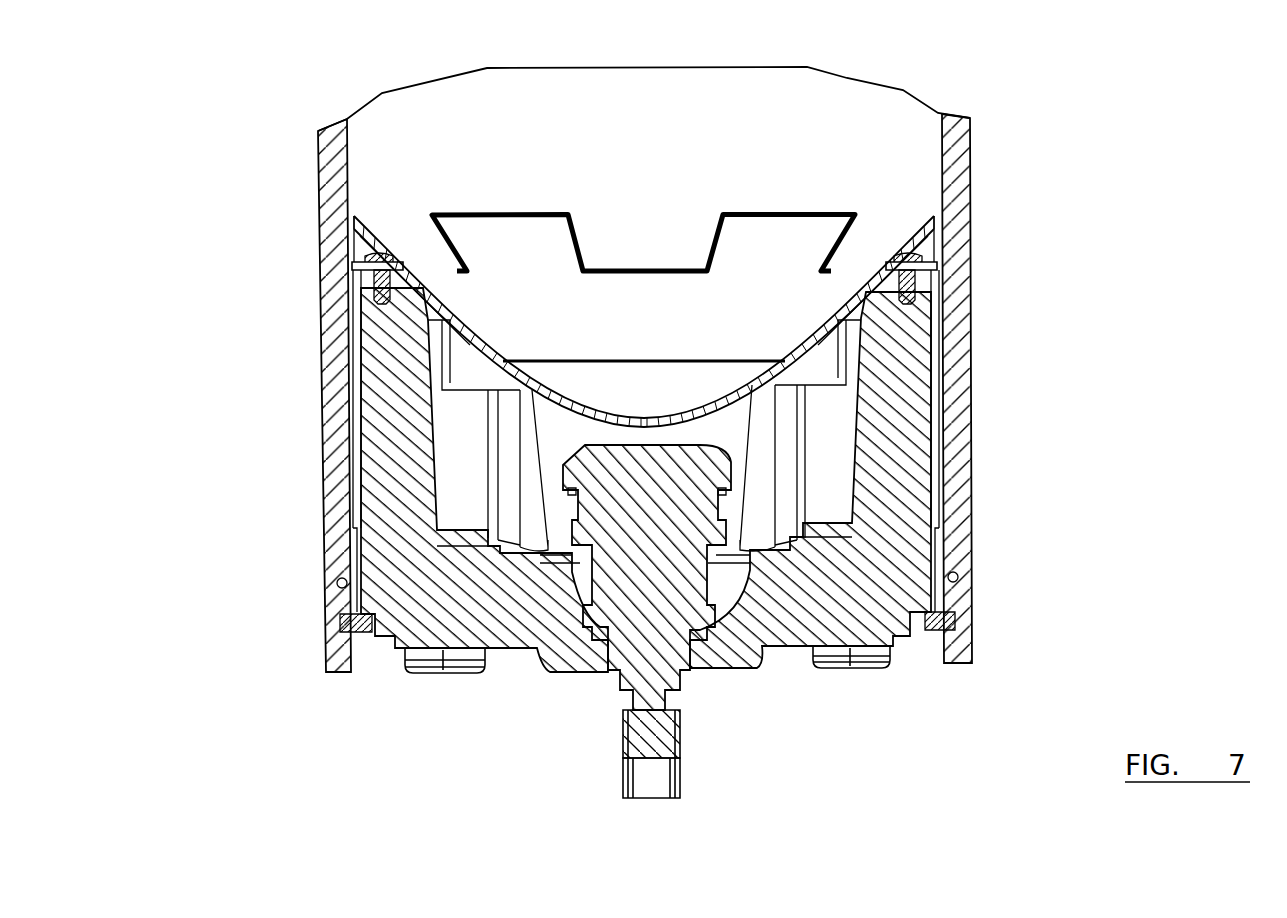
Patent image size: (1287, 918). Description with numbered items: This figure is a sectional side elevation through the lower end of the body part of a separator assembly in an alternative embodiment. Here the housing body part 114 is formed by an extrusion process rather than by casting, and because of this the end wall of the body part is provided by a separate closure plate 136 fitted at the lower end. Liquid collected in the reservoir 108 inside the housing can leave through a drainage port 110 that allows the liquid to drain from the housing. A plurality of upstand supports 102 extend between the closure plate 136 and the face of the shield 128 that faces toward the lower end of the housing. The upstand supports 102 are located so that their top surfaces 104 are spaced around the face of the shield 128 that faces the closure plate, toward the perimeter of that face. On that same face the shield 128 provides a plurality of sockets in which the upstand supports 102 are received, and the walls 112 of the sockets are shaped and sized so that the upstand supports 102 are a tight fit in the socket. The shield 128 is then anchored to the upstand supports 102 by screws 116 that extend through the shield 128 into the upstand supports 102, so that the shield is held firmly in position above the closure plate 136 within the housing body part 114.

The upstand supports 102 is at (380, 485).
The top surfaces 104 is at (352, 252).
The reservoir 108 is at (462, 510).
The drainage port 110 is at (703, 640).
The walls 112 is at (378, 300).
The housing body part 114 is at (952, 436).
The screws 116 is at (354, 232).
The shield 128 is at (828, 348).
The closure plate 136 is at (905, 642).